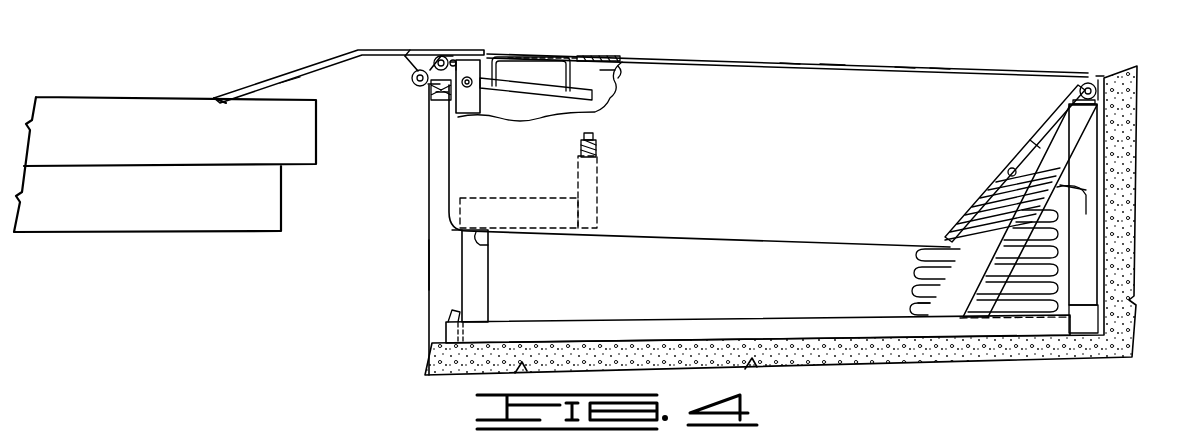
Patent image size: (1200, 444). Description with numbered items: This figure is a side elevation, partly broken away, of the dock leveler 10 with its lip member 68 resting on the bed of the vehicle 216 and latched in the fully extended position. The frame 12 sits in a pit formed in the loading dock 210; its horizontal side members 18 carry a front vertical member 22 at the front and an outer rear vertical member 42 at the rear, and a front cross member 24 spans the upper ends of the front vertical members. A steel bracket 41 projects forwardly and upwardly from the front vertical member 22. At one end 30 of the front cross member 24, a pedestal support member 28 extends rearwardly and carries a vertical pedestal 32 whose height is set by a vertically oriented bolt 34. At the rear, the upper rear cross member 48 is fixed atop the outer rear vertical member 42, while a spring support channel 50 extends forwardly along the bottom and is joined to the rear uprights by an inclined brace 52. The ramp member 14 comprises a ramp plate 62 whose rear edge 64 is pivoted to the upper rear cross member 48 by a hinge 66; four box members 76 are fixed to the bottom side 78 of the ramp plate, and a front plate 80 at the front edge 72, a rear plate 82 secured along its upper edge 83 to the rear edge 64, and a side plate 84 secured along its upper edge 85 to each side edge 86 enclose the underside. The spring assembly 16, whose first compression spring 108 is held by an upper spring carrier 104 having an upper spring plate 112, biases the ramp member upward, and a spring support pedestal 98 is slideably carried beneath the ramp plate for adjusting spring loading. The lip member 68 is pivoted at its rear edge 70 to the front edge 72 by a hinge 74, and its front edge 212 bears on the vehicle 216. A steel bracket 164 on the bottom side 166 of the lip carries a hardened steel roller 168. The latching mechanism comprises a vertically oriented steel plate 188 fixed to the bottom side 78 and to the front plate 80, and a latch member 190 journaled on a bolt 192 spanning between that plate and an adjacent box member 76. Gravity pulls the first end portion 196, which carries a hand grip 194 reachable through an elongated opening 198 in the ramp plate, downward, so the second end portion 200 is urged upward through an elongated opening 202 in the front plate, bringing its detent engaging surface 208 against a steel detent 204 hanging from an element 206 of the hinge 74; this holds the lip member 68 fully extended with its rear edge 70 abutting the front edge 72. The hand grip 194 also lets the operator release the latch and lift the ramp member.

The dock leveler 10 is at (250, 43).
The frame 12 is at (1088, 115).
The ramp member 14 is at (808, 60).
The spring assembly 16 is at (925, 268).
The horizontal side member 18 is at (605, 330).
The front vertical member 22 is at (483, 283).
The front cross member 24 is at (462, 238).
The pedestal support member 28 is at (508, 196).
The end of front cross member 30 is at (490, 246).
The vertical pedestal 32 is at (600, 180).
The vertically oriented bolt 34 is at (598, 137).
The steel bracket 41 is at (450, 318).
The outer rear vertical member 42 is at (1090, 147).
The upper rear cross member 48 is at (1104, 95).
The spring support channel 50 is at (975, 324).
The inclined brace 52 is at (1050, 203).
The ramp plate 62 is at (786, 58).
The rear edge of ramp plate 64 is at (1088, 80).
The hinge 66 is at (1100, 85).
The lip member 68 is at (322, 58).
The rear edge of lip member 70 is at (441, 56).
The front edge of ramp plate 72 is at (457, 62).
The hinge 74 is at (448, 56).
The box member 76 is at (612, 62).
The bottom side of ramp plate 78 is at (622, 75).
The front plate 80 is at (447, 110).
The rear plate 82 is at (1038, 140).
The upper edge of rear plate 83 is at (1057, 106).
The side plate 84 is at (830, 72).
The upper edge of side plate 85 is at (898, 66).
The side edge of ramp plate 86 is at (935, 72).
The spring support pedestal 98 is at (1010, 168).
The upper spring carrier 104 is at (1068, 186).
The first compression spring 108 is at (918, 292).
The upper spring plate 112 is at (1081, 202).
The steel bracket 164 is at (420, 58).
The bottom side of lip member 166 is at (290, 80).
The hardened steel roller 168 is at (412, 78).
The vertically oriented steel plate 188 is at (492, 60).
The latch member 190 is at (518, 94).
The bolt 192 is at (461, 113).
The hand grip 194 is at (548, 57).
The elongated opening 198 is at (580, 57).
The first end portion of latch member 196 is at (600, 110).
The second end portion of latch member 200 is at (445, 103).
The elongated opening 202 is at (458, 60).
The steel detent 204 is at (405, 62).
The hinge element 206 is at (440, 95).
The detent engaging surface 208 is at (428, 85).
The loading dock 210 is at (429, 266).
The front edge of lip member 212 is at (216, 97).
The vehicle 216 is at (124, 99).